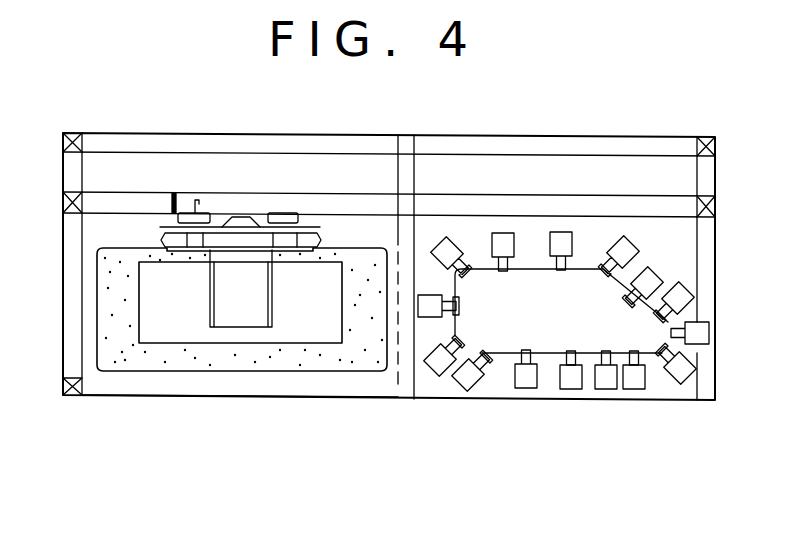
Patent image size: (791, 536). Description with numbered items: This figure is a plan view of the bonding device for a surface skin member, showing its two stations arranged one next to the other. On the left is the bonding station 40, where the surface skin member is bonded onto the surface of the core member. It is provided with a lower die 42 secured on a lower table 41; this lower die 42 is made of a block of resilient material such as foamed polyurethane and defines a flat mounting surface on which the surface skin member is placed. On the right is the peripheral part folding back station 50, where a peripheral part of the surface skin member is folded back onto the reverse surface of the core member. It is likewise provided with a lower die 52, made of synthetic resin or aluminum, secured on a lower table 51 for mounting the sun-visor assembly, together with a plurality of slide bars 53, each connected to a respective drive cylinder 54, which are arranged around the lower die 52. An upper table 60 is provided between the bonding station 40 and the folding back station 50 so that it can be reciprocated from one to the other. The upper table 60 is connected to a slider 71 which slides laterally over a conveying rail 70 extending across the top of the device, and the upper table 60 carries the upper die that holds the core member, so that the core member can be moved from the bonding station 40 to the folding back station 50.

The bonding station 40 is at (120, 398).
The lower table 41 is at (165, 378).
The lower die 42 is at (260, 357).
The upper table 60 is at (298, 320).
The conveying rail 70 is at (443, 200).
The slider 71 is at (240, 242).
The peripheral part folding back station 50 is at (563, 363).
The lower table 51 is at (657, 370).
The lower die 52 is at (498, 335).
The slide bars 53 is at (626, 303).
The drive cylinders 54 is at (572, 384).